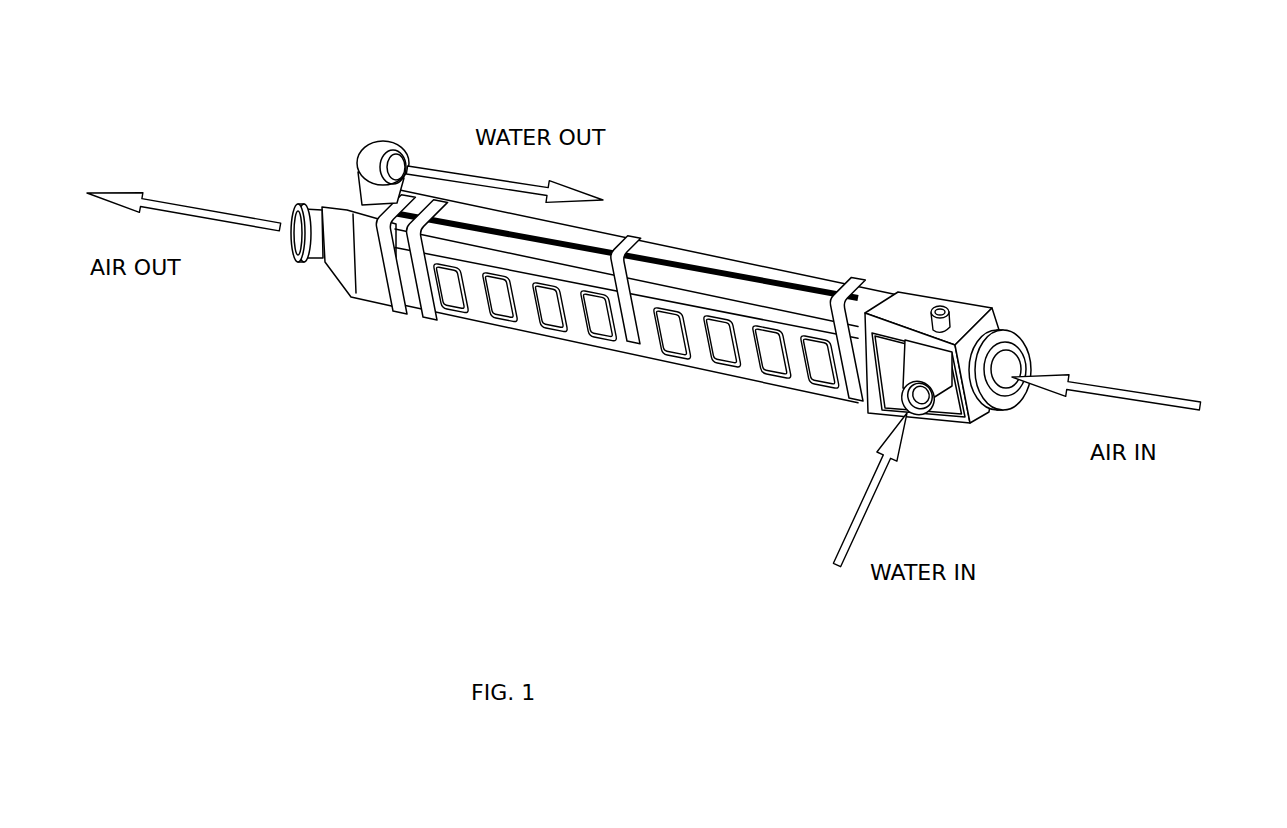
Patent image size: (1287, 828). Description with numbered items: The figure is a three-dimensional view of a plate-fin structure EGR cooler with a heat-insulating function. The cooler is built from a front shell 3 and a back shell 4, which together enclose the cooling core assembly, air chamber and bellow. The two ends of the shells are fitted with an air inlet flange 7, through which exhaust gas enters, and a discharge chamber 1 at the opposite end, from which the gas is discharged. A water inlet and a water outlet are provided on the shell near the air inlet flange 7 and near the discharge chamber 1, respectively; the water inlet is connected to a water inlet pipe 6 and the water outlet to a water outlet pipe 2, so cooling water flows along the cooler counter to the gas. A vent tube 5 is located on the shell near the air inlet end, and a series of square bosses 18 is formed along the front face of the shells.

The discharge chamber 1 is at (315, 217).
The water outlet pipe 2 is at (380, 153).
The shell 3 is at (643, 248).
The shell 4 is at (760, 273).
The vent tube 5 is at (942, 310).
The water inlet pipe 6 is at (921, 389).
The air inlet flange 7 is at (1010, 372).
The square boss 18 is at (602, 315).